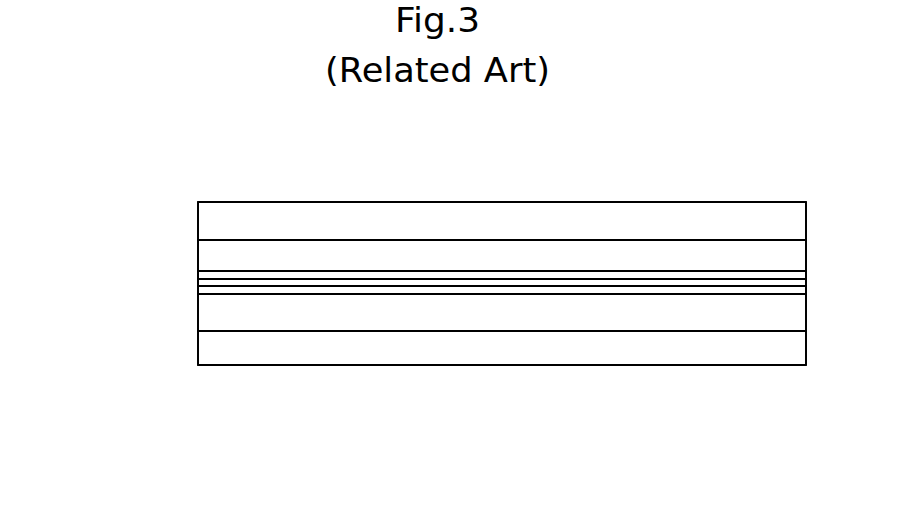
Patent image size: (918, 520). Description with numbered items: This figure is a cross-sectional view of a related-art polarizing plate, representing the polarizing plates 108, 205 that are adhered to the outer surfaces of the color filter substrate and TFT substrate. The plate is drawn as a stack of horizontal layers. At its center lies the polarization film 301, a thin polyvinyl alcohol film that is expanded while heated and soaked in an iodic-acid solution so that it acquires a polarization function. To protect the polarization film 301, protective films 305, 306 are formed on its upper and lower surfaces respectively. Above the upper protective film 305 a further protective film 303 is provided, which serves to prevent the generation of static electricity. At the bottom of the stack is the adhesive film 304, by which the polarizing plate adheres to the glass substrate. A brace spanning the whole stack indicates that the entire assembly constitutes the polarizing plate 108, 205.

The polarizing plate 108 is at (431, 283).
The polarizing plate 205 is at (185, 215).
The polarization film 301 is at (776, 282).
The protective film 303 is at (790, 212).
The adhesive film 304 is at (788, 353).
The protective film 305 is at (700, 257).
The protective film 306 is at (740, 307).